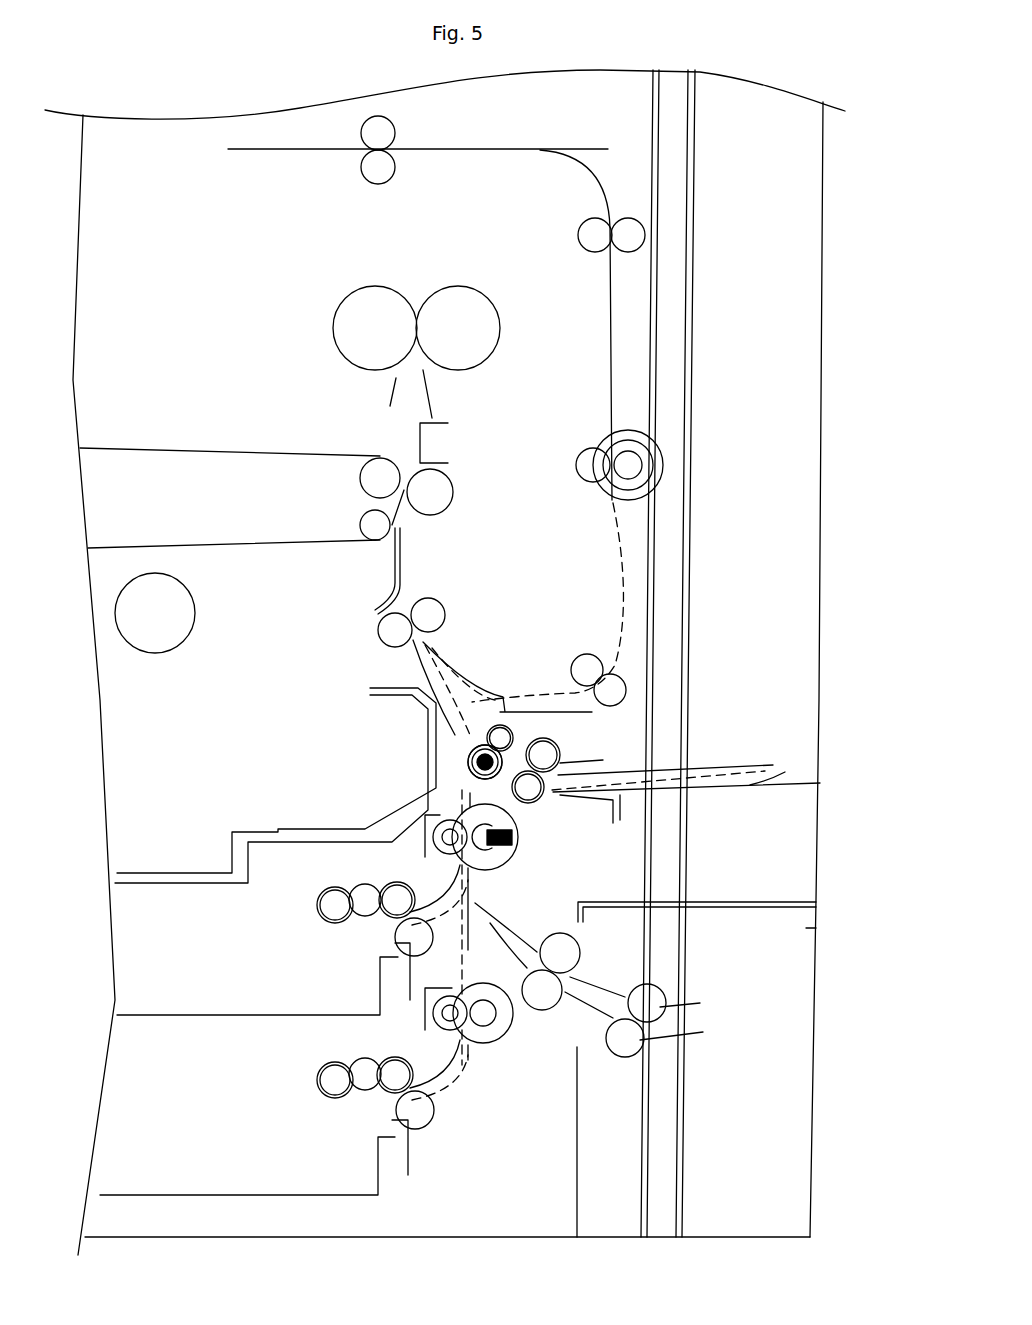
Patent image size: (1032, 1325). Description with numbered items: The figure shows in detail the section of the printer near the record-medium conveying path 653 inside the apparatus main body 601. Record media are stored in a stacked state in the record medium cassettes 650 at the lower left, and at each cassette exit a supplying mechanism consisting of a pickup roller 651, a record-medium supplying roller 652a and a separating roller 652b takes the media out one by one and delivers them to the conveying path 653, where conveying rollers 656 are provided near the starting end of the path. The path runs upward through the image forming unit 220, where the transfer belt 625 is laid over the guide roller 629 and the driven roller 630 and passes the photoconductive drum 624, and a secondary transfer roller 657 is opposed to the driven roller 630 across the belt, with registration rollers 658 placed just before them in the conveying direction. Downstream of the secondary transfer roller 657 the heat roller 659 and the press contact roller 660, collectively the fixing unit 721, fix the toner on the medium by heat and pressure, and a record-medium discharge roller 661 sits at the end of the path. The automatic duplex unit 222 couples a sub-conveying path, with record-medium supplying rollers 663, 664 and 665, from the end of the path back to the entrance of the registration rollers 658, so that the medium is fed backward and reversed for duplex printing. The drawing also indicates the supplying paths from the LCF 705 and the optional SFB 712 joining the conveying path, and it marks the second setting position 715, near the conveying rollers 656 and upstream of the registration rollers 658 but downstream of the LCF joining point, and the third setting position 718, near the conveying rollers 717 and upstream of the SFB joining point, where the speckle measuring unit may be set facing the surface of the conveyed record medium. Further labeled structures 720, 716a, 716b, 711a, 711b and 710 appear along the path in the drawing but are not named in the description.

The apparatus main body 601 is at (824, 215).
The image forming unit 220 is at (377, 455).
The automatic duplex unit 222 is at (539, 214).
The fixing unit 721 is at (401, 310).
The heat roller 659 is at (357, 300).
The press contact roller 660 is at (441, 293).
The record-medium discharge roller 661 is at (396, 140).
The record-medium supplying roller 663 is at (617, 252).
The record-medium supplying roller 664 is at (612, 446).
The record-medium supplying roller 665 is at (613, 672).
The transfer belt 625 is at (173, 449).
The photoconductive drum 624 is at (167, 583).
The driven roller 630 is at (360, 472).
The guide roller 629 is at (361, 521).
The secondary transfer roller 657 is at (445, 482).
The registration rollers 658 is at (379, 633).
The conveying path 720 is at (432, 532).
The conveying rollers 717 is at (502, 724).
The third setting position 718 is at (470, 773).
The conveying roller 716a is at (553, 747).
The conveying roller 716b is at (532, 800).
The second setting position 715 is at (513, 840).
The SFB 712 is at (686, 781).
The LCF 705 is at (806, 928).
The conveying rollers 656 is at (437, 840).
The record-medium supplying roller 652a is at (393, 883).
The separating roller 652b is at (387, 952).
The pickup roller 651 is at (367, 910).
The record medium cassette 650 is at (173, 1015).
The record-medium conveying path 653 is at (496, 1120).
The conveying roller 711a is at (563, 950).
The conveying roller 711b is at (547, 1000).
The conveying rollers 710 is at (645, 1040).